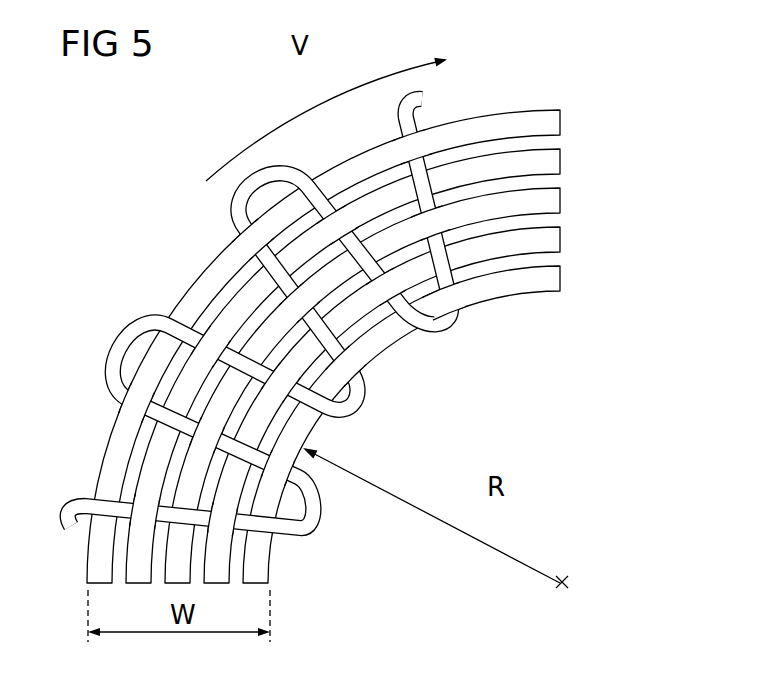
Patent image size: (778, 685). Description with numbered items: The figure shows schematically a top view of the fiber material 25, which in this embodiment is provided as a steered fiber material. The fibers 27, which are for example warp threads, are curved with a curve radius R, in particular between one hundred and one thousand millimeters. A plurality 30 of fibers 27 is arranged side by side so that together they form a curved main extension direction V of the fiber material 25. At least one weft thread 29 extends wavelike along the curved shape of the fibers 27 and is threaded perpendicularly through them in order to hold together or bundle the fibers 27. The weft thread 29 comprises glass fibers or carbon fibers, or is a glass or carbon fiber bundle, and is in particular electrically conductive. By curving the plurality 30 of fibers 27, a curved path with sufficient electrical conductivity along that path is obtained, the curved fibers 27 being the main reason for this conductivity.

The fiber material 25 is at (118, 180).
The fibers 27 is at (622, 291).
The weft thread 29 is at (123, 342).
The plurality of fibers 30 is at (385, 345).